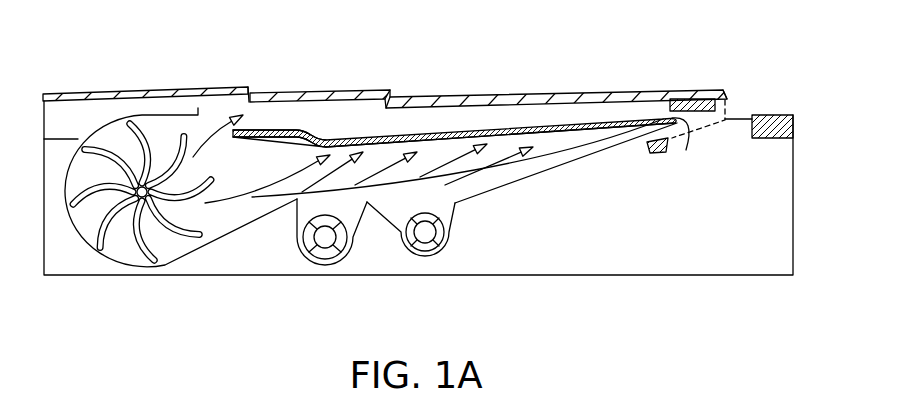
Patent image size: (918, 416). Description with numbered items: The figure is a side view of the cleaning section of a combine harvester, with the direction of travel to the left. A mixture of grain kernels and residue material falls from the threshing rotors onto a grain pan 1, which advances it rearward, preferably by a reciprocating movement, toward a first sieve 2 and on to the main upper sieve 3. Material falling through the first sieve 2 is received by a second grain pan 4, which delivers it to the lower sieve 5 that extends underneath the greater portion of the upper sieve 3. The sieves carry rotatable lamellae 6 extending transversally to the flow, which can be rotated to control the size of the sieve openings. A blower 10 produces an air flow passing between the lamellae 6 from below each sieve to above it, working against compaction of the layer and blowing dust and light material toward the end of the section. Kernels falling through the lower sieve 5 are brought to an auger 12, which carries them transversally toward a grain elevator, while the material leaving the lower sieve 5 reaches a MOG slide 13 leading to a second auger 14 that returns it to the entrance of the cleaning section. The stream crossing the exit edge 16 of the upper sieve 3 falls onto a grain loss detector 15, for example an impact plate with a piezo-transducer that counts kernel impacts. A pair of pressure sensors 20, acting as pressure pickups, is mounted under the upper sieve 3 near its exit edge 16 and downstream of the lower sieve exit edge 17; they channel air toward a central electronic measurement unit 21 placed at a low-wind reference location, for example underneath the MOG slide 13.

The grain pan 1 is at (92, 92).
The first sieve 2 is at (322, 92).
The main upper sieve 3 is at (511, 85).
The second grain pan 4 is at (268, 130).
The lower sieve 5 is at (460, 113).
The rotatable lamellae 6 is at (560, 125).
The blower 10 is at (100, 245).
The auger 12 is at (304, 256).
The MOG slide 13 is at (540, 178).
The second auger 14 is at (427, 238).
The grain loss detector 15 is at (767, 115).
The exit edge 16 is at (726, 90).
The exit edge of the lower sieve 17 is at (688, 128).
The pressure sensors 20 is at (683, 99).
The central electronic measurement unit 21 is at (660, 153).